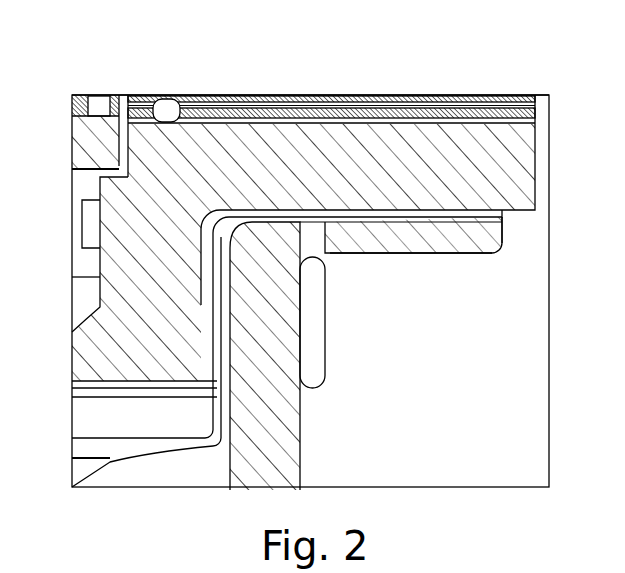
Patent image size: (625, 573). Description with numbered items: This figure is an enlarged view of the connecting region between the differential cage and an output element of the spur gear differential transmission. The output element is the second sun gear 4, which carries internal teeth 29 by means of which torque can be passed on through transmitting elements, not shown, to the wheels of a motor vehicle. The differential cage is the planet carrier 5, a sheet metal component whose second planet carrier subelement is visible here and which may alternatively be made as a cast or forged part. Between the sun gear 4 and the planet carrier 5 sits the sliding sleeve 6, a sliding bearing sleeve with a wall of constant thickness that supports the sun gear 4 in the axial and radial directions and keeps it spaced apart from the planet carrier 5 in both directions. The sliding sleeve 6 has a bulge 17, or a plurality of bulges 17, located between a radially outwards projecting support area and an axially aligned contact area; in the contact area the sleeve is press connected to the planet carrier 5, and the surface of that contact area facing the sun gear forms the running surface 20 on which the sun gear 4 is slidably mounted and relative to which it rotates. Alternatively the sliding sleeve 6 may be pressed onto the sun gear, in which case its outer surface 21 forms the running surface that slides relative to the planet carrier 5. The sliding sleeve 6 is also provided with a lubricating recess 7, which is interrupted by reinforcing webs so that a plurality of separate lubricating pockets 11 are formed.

The second sun gear 4 is at (513, 163).
The internal teeth 29 is at (410, 95).
The bulge 17 is at (185, 222).
The outer surface 21 is at (318, 225).
The lubricating recess 7 is at (387, 213).
The lubricating pockets 11 is at (312, 322).
The planet carrier 5 is at (455, 230).
The sliding sleeve 6 is at (503, 211).
The running surface 20 is at (270, 205).